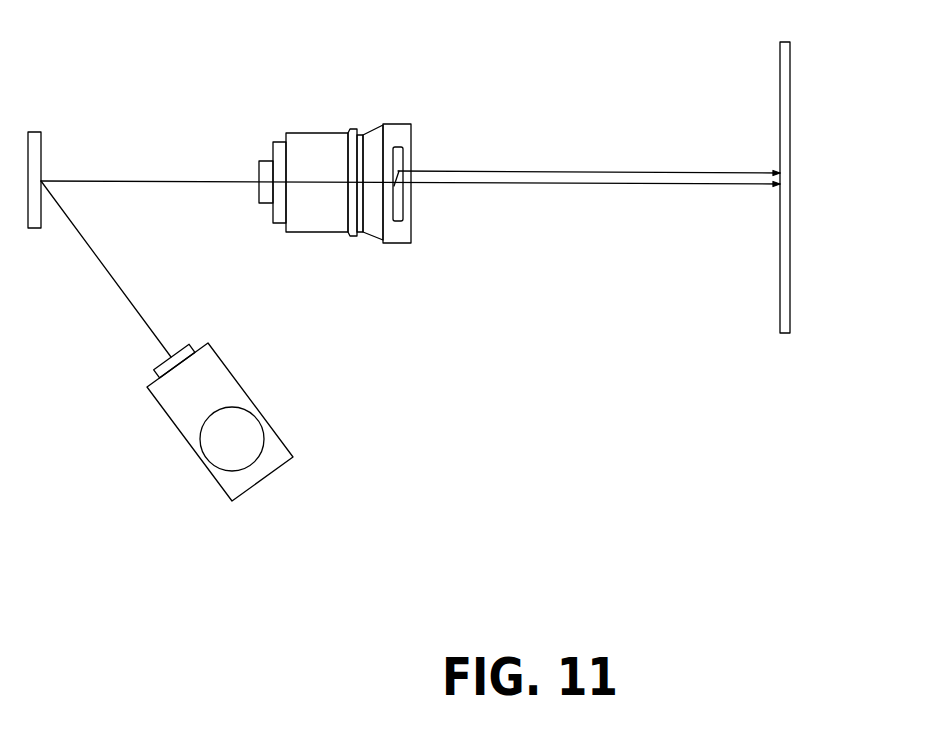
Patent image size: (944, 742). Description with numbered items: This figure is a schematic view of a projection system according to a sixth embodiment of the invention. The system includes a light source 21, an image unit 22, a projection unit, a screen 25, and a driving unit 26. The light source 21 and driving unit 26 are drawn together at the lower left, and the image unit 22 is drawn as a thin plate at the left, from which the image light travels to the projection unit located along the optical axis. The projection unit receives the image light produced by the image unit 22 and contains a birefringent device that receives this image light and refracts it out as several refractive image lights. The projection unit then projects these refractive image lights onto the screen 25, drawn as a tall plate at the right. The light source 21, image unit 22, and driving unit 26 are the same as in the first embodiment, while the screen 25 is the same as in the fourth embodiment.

The light source 21 is at (238, 436).
The image unit 22 is at (38, 146).
The screen 25 is at (785, 155).
The driving unit 26 is at (203, 383).